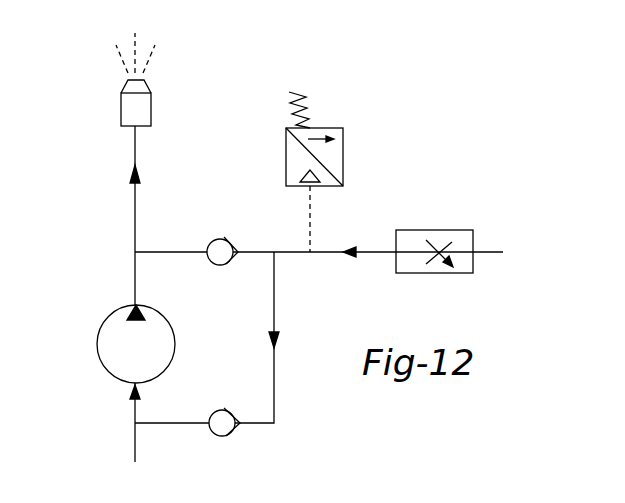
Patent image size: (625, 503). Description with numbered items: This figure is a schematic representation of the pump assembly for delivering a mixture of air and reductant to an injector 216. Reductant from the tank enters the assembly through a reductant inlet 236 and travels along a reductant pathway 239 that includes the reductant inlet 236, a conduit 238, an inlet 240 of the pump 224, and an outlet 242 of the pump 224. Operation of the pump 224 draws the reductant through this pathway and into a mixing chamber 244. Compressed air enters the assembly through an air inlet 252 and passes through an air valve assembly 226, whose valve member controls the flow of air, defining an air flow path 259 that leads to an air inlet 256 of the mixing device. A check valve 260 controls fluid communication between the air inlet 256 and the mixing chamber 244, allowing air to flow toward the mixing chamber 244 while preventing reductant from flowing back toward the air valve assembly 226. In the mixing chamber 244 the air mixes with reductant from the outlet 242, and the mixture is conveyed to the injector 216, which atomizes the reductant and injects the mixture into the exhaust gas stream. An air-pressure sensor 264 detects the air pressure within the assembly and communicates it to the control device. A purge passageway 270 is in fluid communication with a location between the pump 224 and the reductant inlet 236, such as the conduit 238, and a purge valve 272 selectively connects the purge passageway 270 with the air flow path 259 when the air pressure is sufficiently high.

The injector 216 is at (121, 117).
The pump 224 is at (97, 345).
The air valve assembly 226 is at (443, 230).
The reductant inlet 236 is at (130, 462).
The conduit 238 is at (137, 413).
The reductant pathway 239 is at (134, 421).
The inlet 240 is at (133, 386).
The outlet 242 is at (137, 305).
The mixing chamber 244 is at (128, 226).
The air inlet 252 is at (503, 252).
The air inlet 256 is at (258, 250).
The air flow path 259 is at (321, 255).
The check valve 260 is at (209, 243).
The air-pressure sensor 264 is at (343, 151).
The purge passageway 270 is at (172, 424).
The purge valve 272 is at (228, 436).